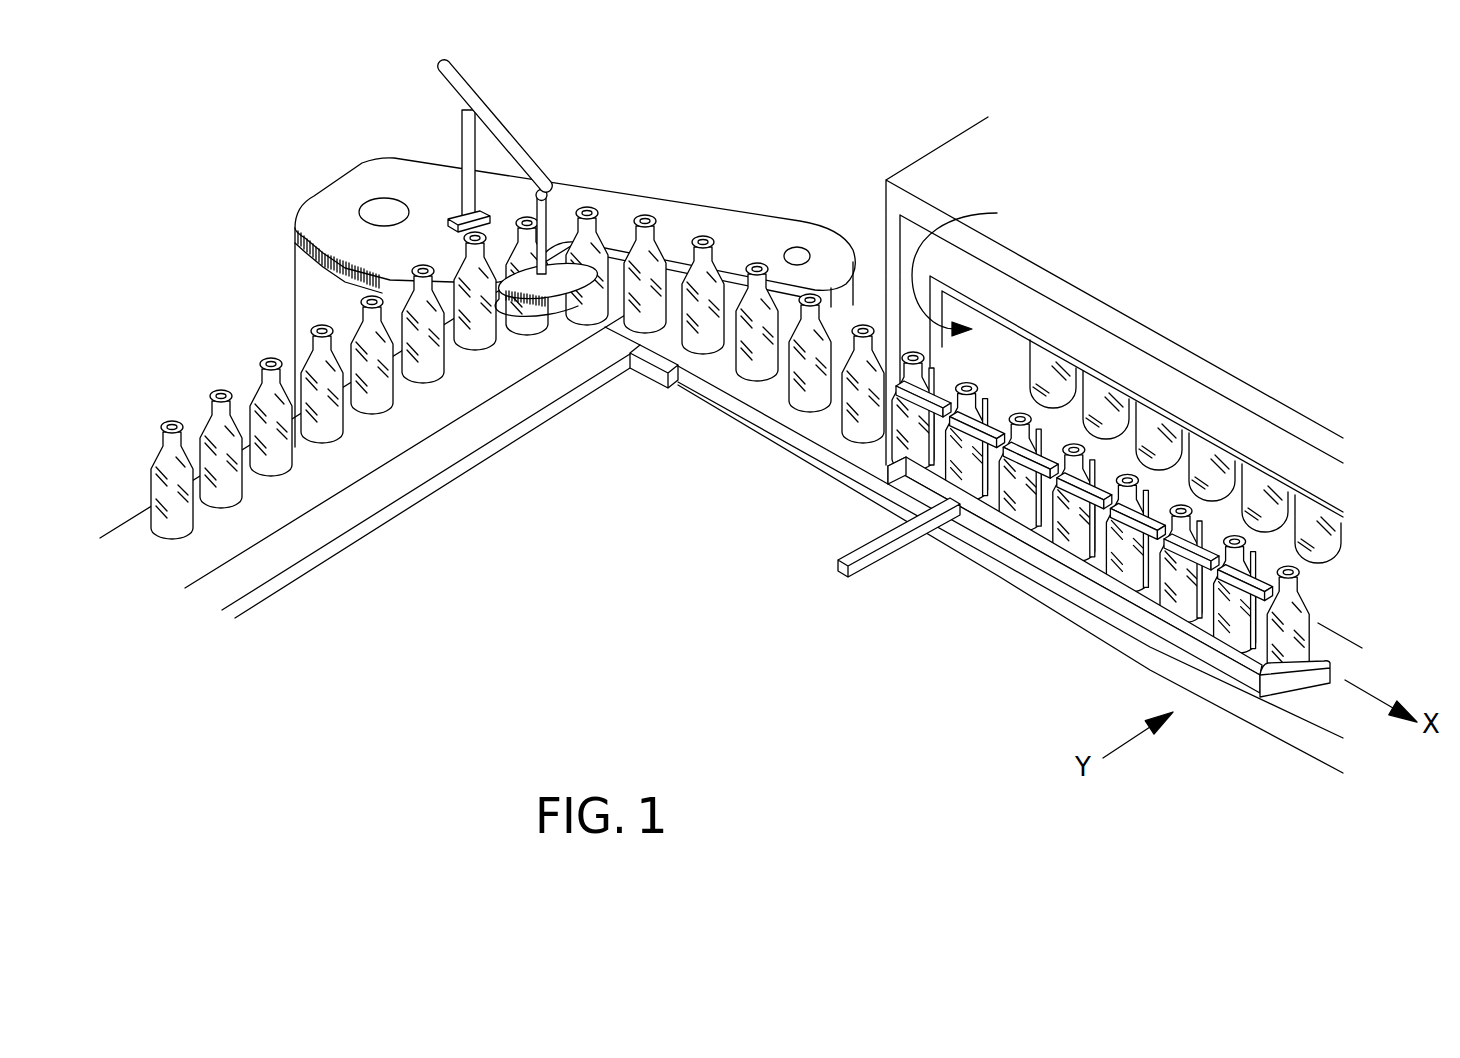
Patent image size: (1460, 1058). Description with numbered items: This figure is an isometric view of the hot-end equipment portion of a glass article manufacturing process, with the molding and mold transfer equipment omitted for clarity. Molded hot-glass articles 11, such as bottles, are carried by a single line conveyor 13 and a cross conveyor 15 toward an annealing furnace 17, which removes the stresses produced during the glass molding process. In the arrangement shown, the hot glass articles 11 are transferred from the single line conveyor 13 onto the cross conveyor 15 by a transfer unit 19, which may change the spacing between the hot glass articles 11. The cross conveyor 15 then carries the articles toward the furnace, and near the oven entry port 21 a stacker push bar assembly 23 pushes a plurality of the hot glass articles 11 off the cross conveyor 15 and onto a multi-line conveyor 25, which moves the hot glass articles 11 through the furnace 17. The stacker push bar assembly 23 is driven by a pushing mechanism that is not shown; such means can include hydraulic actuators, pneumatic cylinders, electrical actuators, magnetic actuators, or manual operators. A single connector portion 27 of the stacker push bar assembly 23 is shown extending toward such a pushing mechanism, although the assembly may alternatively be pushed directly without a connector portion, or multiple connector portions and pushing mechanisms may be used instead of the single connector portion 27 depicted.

The hot-glass articles 11 is at (271, 357).
The single line conveyor 13 is at (358, 458).
The cross conveyor 15 is at (830, 430).
The annealing furnace 17 is at (960, 136).
The transfer unit 19 is at (330, 182).
The oven entry port 21 is at (971, 266).
The stacker push bar assembly 23 is at (1070, 577).
The multi-line conveyor 25 is at (1028, 397).
The connector portion 27 is at (866, 561).